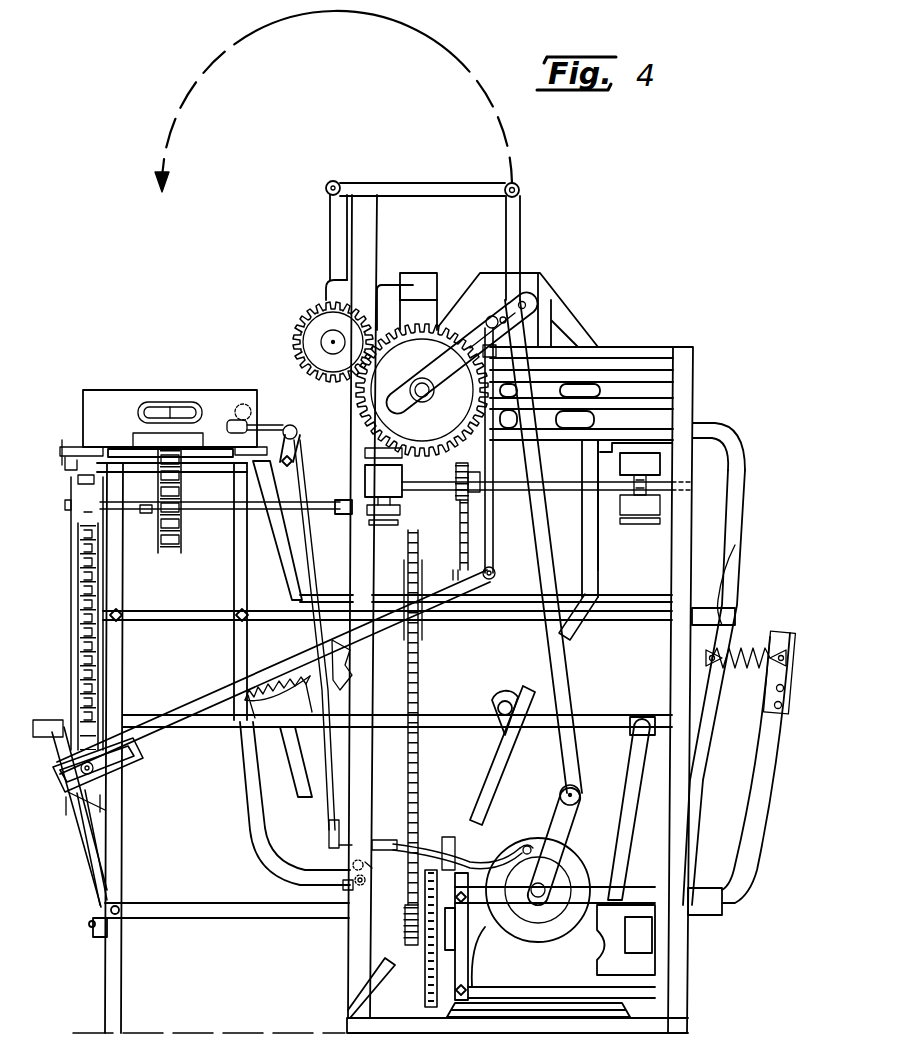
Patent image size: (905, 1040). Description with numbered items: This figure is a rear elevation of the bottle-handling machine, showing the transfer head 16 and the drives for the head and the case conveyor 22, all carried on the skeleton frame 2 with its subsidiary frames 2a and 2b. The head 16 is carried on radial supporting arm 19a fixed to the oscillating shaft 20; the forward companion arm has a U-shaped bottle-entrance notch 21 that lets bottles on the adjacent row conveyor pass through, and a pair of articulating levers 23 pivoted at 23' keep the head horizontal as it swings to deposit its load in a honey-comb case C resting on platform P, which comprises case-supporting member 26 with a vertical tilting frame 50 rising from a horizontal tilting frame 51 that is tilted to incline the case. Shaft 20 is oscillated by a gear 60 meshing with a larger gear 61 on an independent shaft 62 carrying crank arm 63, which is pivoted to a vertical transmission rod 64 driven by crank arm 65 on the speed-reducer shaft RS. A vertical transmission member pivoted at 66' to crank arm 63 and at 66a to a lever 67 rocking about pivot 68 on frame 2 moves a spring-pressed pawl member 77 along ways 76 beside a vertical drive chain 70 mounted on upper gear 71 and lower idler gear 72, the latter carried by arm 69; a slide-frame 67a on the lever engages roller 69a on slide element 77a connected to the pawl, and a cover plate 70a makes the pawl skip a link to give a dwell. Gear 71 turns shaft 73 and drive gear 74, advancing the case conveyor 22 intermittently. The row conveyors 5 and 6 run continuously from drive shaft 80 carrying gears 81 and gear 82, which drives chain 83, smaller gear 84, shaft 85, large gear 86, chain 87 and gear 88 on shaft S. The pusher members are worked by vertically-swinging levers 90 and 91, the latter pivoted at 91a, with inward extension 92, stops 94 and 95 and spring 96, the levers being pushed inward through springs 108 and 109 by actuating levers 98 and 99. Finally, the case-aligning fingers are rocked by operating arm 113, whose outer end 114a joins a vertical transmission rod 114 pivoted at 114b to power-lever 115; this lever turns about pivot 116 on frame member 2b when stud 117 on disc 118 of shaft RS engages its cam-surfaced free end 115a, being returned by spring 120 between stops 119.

The skeleton frame 2 is at (360, 236).
The subsidiary frame 2a is at (330, 214).
The subsidiary frame member 2b is at (336, 182).
The stub or row conveyor 5 is at (640, 487).
The stub or row conveyor 6 is at (383, 472).
The transfer head 16 is at (535, 277).
The radial supporting arm 19a is at (425, 290).
The oscillating driven shaft 20 is at (326, 341).
The bottle-entrance bend or notch 21 is at (397, 290).
The case conveyor 22 is at (185, 532).
The articulating lever 23 is at (422, 172).
The pivot 23' is at (540, 224).
The case-supporting member 26 is at (228, 447).
The vertical tilting frame 50 is at (66, 462).
The horizontal tilting frame 51 is at (441, 717).
The gear 60 is at (320, 322).
The larger gear 61 is at (422, 390).
The independent oscillating shaft 62 is at (430, 396).
The crank arm 63 is at (462, 352).
The vertical transmission rod 64 is at (551, 513).
The crank arm 65 is at (572, 818).
The pivot 66' is at (471, 405).
The pivot 66a is at (505, 566).
The lever 67 is at (236, 684).
The slide-frame 67a is at (134, 752).
The pivot 68 is at (355, 655).
The arm 69 is at (56, 760).
The roller 69a is at (78, 796).
The drive chain 70 is at (80, 566).
The cover plate 70a is at (88, 513).
The upper gear 71 is at (75, 493).
The idler gear 72 is at (55, 722).
The shaft 73 is at (66, 505).
The drive gear 74 is at (184, 488).
The ways 76 is at (72, 640).
The pawl member 77 is at (128, 714).
The slide element 77a is at (105, 800).
The drive shaft 80 is at (546, 482).
The gears 81 is at (634, 484).
The gear 82 is at (480, 470).
The chain 83 is at (470, 526).
The smaller gear 84 is at (458, 582).
The shaft 85 is at (582, 586).
The large gear 86 is at (410, 520).
The chain 87 is at (420, 662).
The gear 88 is at (402, 922).
The vertically-swinging lever-arm 90 is at (742, 580).
The vertically-swinging lever-arm 91 is at (267, 486).
The pivot 91a is at (345, 892).
The inward extension 92 is at (714, 424).
The stop member 94 is at (738, 613).
The stop member 95 is at (278, 736).
The spring 96 is at (715, 590).
The actuating lever 98 is at (768, 766).
The actuating lever 99 is at (247, 808).
The spring 108 is at (752, 670).
The spring 109 is at (278, 697).
The operating arm 113 is at (283, 424).
The vertical transmission rod 114 is at (308, 556).
The outer end 114a is at (291, 425).
The pivot 114b is at (328, 845).
The power-lever 115 is at (394, 840).
The free end 115a is at (512, 846).
The pivot 116 is at (441, 840).
The stud 117 is at (508, 885).
The disc 118 is at (573, 870).
The movement-limiting stops 119 is at (352, 880).
The spring 120 is at (368, 862).
The honey-comb case C is at (123, 392).
The tiltable case-support or platform P is at (74, 436).
The shaft S is at (420, 955).
The gear reduction shaft RS is at (572, 1035).